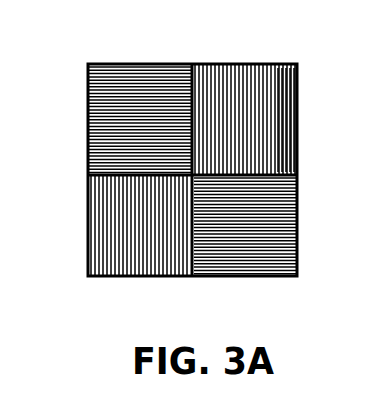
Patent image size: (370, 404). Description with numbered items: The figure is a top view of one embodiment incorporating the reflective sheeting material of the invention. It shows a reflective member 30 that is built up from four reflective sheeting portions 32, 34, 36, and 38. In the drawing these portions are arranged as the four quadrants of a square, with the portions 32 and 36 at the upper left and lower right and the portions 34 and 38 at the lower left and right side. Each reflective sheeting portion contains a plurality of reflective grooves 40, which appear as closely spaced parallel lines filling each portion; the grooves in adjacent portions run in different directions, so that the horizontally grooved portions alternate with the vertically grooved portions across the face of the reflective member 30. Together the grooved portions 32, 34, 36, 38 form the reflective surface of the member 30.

The reflective member 30 is at (185, 170).
The reflective sheeting portion 32 is at (113, 86).
The reflective sheeting portion 34 is at (94, 209).
The reflective sheeting portion 36 is at (177, 279).
The reflective sheeting portion 38 is at (263, 105).
The reflective grooves 40 is at (242, 78).